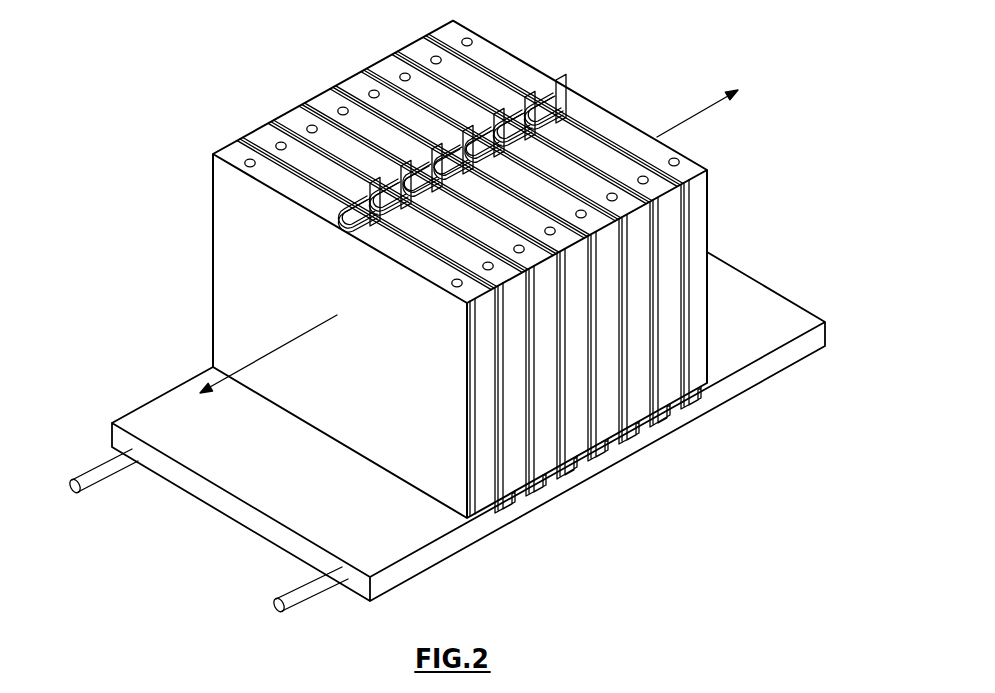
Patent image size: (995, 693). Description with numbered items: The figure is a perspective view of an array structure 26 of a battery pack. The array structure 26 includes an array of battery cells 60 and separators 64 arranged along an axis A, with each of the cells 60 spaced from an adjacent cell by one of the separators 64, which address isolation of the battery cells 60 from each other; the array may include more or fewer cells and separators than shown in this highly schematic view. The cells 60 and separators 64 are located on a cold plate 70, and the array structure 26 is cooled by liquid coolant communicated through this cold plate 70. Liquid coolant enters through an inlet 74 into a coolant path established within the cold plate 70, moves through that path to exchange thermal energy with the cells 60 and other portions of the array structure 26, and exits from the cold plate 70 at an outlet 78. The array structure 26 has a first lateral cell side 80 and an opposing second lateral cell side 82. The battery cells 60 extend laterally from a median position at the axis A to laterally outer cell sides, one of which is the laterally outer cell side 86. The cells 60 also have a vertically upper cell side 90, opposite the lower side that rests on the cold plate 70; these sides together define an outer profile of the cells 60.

The array structure 26 is at (428, 317).
The second lateral cell side 82 is at (445, 274).
The vertically upper cell side 90 is at (608, 160).
The battery cell 60 is at (515, 415).
The separator 64 is at (532, 390).
The laterally outer cell side 86 is at (573, 353).
The cold plate 70 is at (445, 547).
The inlet 74 is at (80, 475).
The outlet 78 is at (288, 594).
The first lateral cell side 80 is at (426, 432).
The axis A is at (297, 340).